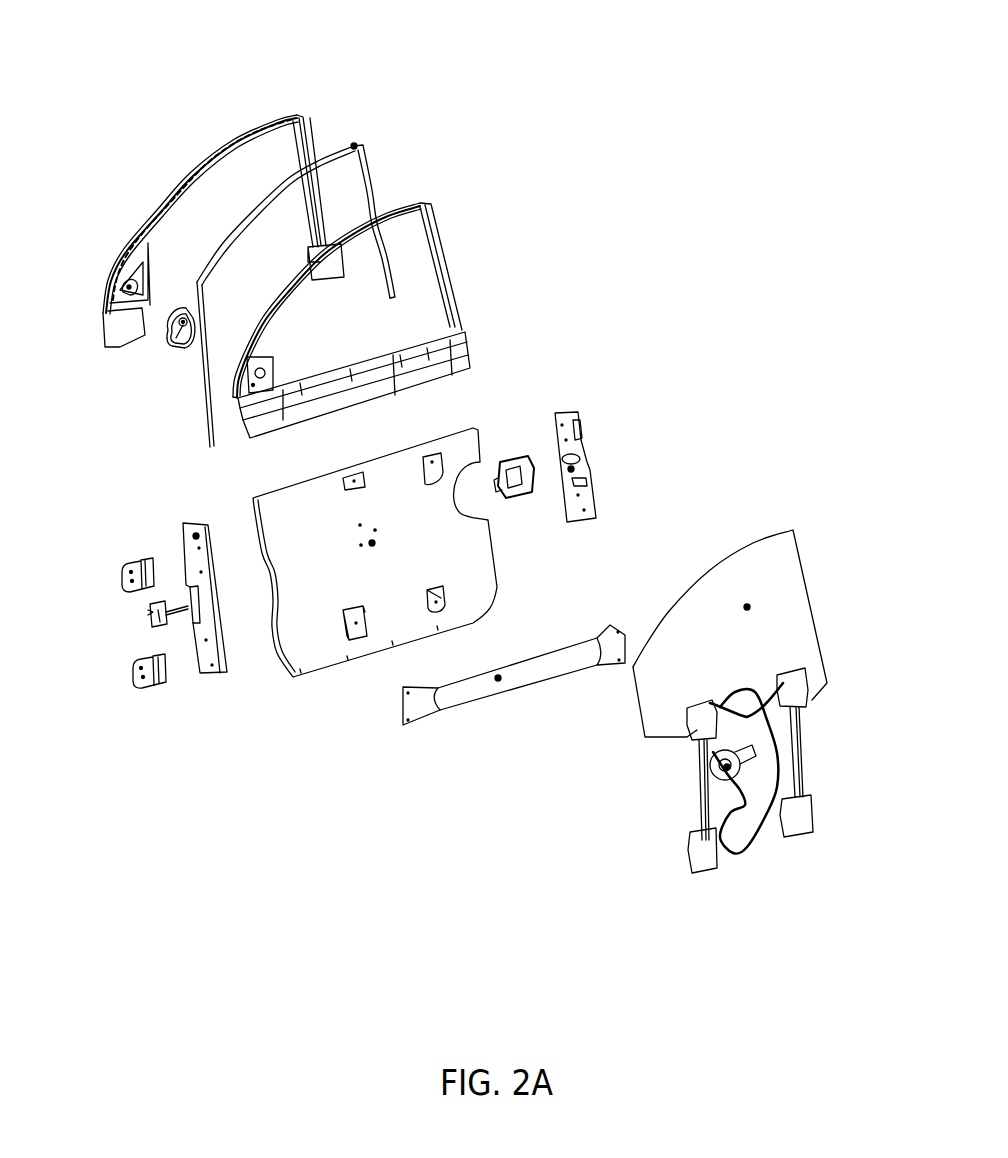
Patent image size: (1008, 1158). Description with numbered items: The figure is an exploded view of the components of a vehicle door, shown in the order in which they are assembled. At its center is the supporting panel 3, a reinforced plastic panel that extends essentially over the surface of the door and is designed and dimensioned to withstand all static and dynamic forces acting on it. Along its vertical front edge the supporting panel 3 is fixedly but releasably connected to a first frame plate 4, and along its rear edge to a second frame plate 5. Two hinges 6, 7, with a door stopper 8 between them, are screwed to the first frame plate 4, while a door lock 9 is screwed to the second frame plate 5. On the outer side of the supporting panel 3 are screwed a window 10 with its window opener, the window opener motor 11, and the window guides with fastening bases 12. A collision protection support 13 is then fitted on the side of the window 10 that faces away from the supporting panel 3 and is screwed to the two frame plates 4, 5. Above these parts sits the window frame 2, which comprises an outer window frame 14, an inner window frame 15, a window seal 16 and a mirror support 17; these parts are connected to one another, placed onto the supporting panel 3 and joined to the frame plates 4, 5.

The window frame 2 is at (171, 147).
The supporting panel 3 is at (372, 543).
The first frame plate 4 is at (196, 536).
The second frame plate 5 is at (571, 469).
The hinge 6 is at (140, 572).
The hinge 7 is at (139, 684).
The door stopper 8 is at (160, 672).
The door lock 9 is at (545, 490).
The window 10 is at (747, 607).
The window opener motor 11 is at (727, 767).
The window guides with fastening bases 12 is at (795, 777).
The collision protection support 13 is at (498, 678).
The outer window frame 14 is at (458, 305).
The inner window frame 15 is at (248, 128).
The window seal 16 is at (354, 146).
The mirror support 17 is at (180, 340).